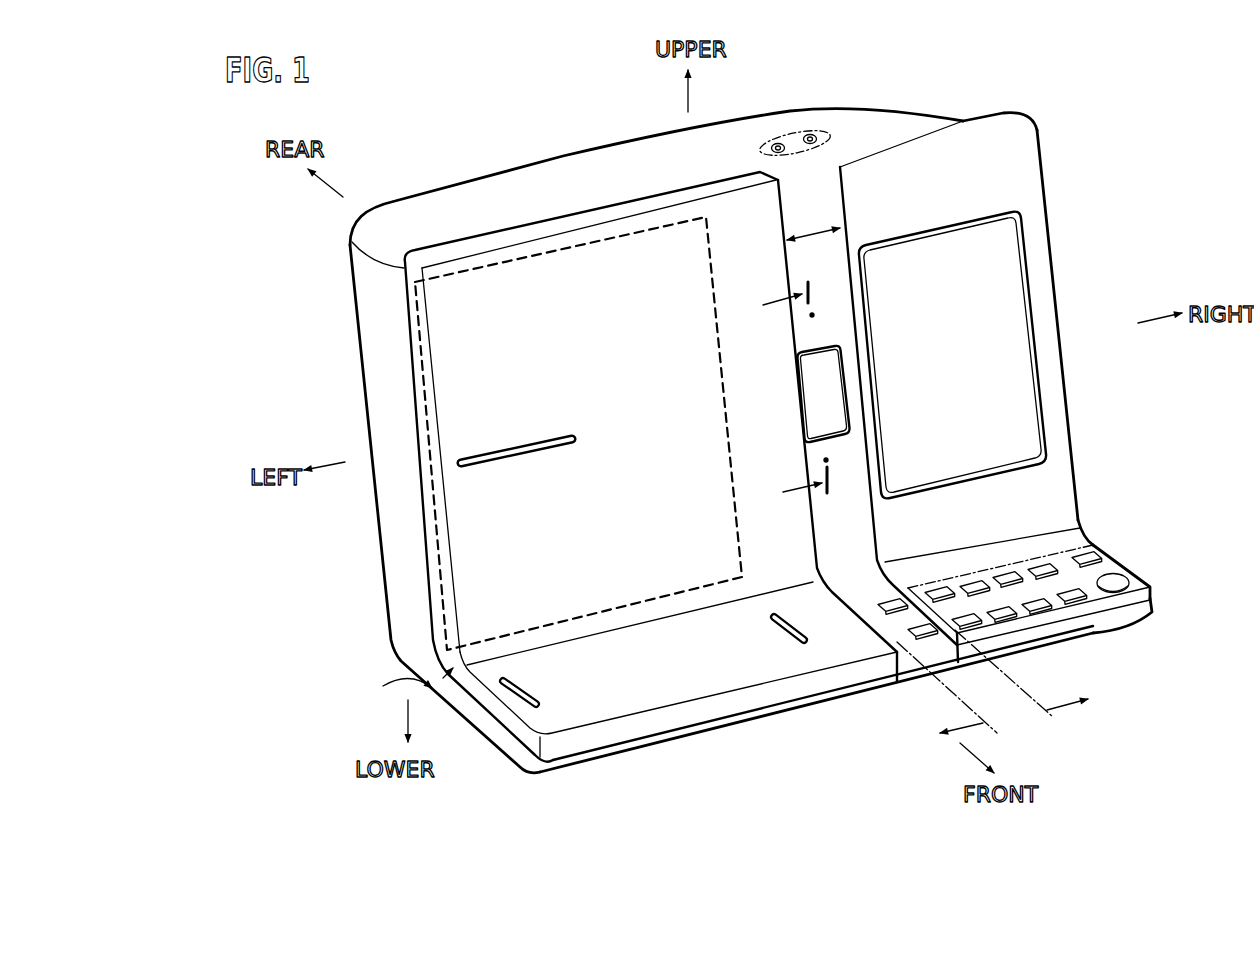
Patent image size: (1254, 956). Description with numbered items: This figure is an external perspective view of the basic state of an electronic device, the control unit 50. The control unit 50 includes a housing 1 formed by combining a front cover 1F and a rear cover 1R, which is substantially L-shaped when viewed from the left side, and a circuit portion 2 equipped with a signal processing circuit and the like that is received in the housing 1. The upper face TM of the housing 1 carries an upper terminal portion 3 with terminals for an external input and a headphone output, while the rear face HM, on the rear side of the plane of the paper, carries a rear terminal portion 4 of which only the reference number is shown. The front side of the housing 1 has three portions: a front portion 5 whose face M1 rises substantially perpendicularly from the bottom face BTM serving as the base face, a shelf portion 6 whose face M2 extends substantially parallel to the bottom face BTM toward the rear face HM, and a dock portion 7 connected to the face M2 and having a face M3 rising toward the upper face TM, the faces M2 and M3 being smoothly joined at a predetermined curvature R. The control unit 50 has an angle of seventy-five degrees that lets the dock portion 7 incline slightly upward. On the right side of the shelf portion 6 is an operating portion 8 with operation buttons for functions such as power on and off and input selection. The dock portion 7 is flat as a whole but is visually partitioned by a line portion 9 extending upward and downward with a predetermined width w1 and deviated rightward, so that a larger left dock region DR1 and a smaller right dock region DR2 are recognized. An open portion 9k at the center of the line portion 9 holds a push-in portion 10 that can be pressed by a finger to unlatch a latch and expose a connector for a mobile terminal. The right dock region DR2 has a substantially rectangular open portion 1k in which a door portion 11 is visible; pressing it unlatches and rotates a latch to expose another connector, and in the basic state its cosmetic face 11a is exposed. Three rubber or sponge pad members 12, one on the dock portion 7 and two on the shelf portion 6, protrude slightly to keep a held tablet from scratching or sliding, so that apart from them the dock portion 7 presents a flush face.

The control unit 50 is at (1177, 57).
The housing 1 is at (1090, 58).
The rear cover 1R is at (937, 111).
The front cover 1F is at (1013, 113).
The open portion 1k is at (1035, 297).
The circuit portion 2 is at (603, 242).
The upper terminal portion 3 is at (790, 130).
The rear terminal portion 4 is at (331, 296).
The front portion 5 is at (830, 687).
The shelf portion 6 is at (657, 662).
The dock portion 7 is at (652, 272).
The operating portion 8 is at (1127, 560).
The line portion 9 is at (822, 197).
The open portion 9k is at (840, 374).
The push-in portion 10 is at (823, 404).
The door portion 11 is at (975, 348).
The cosmetic face 11a is at (1008, 423).
The pad member 12 is at (478, 450).
The rear face HM is at (456, 211).
The upper face TM is at (523, 203).
The face of front portion M1 is at (618, 733).
The face of shelf portion M2 is at (637, 690).
The face of dock portion M3 is at (507, 527).
The width of line portion w1 is at (813, 224).
The section line A- A is at (784, 396).
The curvature R is at (1082, 519).
The left dock region DR1 is at (942, 696).
The right dock region DR2 is at (1049, 673).
The bottom face BTM is at (488, 703).